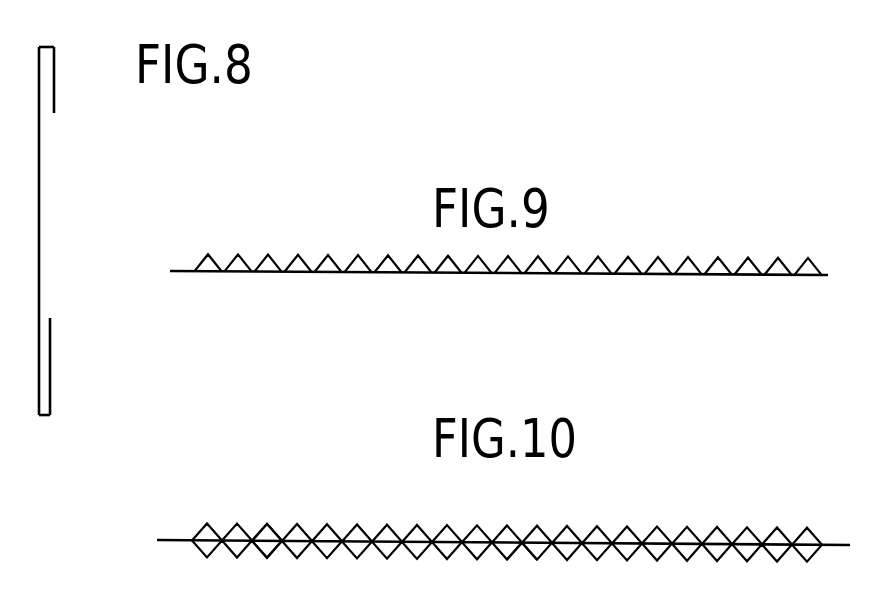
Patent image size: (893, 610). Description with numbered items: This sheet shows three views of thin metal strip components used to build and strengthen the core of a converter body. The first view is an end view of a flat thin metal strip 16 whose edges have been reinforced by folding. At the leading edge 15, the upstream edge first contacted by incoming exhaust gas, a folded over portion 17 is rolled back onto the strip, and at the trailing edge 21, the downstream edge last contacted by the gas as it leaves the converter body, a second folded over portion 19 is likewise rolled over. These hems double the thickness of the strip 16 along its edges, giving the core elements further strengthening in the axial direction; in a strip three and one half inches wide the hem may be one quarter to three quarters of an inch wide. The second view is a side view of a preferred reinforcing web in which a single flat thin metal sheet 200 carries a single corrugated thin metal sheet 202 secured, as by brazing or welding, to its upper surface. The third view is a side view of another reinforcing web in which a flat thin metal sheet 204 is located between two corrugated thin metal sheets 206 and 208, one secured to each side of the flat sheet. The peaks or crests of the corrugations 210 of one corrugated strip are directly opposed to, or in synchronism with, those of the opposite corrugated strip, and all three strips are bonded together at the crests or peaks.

In FIG. 8, the leading edge 15 is at (45, 47).
In FIG. 8, the flat thin metal strip 16 is at (39, 199).
In FIG. 8, the folded over portion 17 is at (53, 82).
In FIG. 8, the folded over portion 19 is at (51, 330).
In FIG. 8, the trailing edge 21 is at (42, 415).
In FIG. 9, the flat thin metal sheet 200 is at (180, 273).
In FIG. 9, the corrugated thin metal sheet 202 is at (272, 265).
In FIG. 10, the flat thin metal sheet 204 is at (841, 546).
In FIG. 10, the corrugated thin metal sheet 206 is at (508, 531).
In FIG. 10, the corrugated thin metal sheet 208 is at (522, 557).
In FIG. 10, the corrugations 210 is at (268, 523).